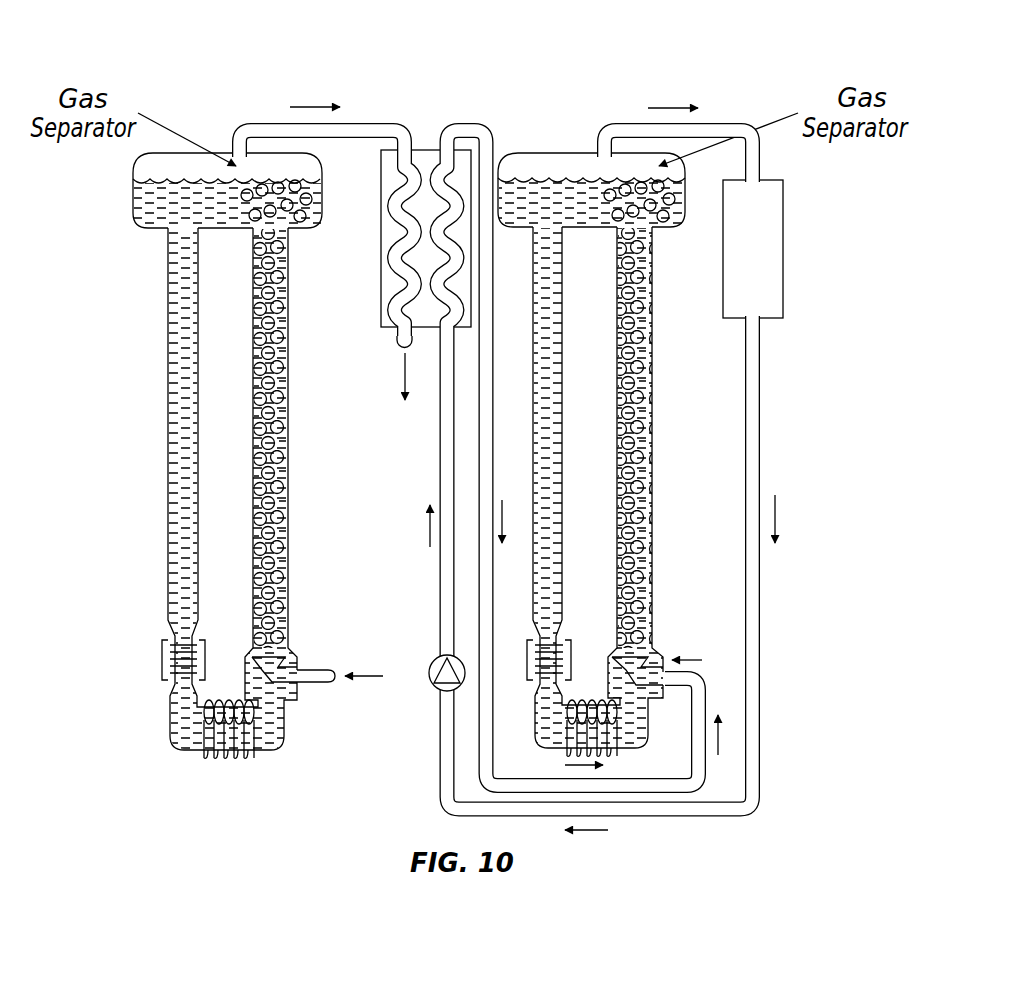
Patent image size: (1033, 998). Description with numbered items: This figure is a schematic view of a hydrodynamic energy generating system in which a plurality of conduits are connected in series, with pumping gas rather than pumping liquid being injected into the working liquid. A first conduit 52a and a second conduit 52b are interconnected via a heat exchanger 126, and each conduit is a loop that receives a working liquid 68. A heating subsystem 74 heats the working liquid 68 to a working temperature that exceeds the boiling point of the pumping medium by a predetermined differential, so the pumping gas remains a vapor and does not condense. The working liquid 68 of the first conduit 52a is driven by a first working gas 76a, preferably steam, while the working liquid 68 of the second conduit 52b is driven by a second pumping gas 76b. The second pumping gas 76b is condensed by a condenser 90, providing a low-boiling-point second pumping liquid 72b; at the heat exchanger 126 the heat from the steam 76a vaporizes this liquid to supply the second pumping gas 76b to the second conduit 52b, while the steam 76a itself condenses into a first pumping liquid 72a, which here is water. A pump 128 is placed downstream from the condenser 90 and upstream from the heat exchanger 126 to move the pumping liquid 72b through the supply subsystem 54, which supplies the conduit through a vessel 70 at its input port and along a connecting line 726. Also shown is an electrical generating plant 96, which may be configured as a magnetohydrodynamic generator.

The first conduit 52a is at (165, 309).
The second conduit 52b is at (657, 360).
The supply subsystem 54 is at (739, 827).
The working liquid 68 is at (177, 398).
The vessel 70 is at (308, 667).
The first pumping liquid 72a is at (349, 358).
The second pumping liquid 72b is at (440, 440).
The heating subsystem 74 is at (222, 758).
The first working gas 76a is at (282, 121).
The second pumping gas 76b is at (470, 125).
The condenser 90 is at (785, 258).
The electrical generating plant 96 is at (144, 641).
The heat exchanger 126 is at (425, 150).
The pump 128 is at (430, 700).
The conduit 726 is at (620, 817).